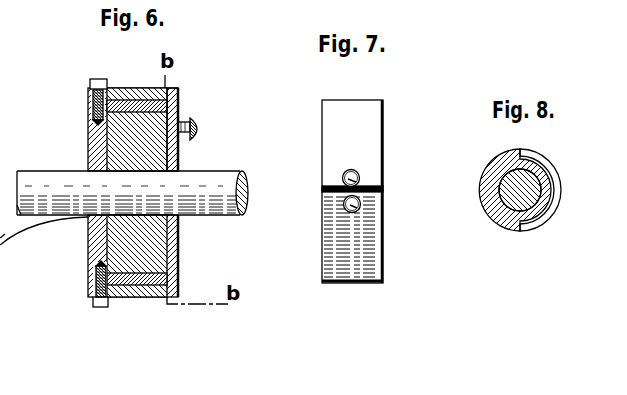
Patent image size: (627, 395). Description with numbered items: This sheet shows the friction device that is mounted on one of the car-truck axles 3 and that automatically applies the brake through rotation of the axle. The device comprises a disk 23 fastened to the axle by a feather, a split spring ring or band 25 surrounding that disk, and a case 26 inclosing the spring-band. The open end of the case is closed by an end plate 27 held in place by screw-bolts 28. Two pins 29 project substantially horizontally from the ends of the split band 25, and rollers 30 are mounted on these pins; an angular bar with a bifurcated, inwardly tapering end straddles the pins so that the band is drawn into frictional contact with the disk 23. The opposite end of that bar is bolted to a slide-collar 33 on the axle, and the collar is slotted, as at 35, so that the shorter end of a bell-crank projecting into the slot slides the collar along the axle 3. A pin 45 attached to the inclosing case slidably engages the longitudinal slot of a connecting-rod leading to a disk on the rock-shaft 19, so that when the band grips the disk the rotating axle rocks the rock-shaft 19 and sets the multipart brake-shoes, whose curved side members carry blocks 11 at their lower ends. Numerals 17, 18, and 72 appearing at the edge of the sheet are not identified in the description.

In FIG. 6, the axle 3 is at (229, 183).
In FIG. 8, the axle 3 is at (524, 188).
In FIG. 6, the disk 23 is at (118, 142).
In FIG. 6, the split spring ring or band 25 is at (178, 106).
In FIG. 7, the split spring ring or band 25 is at (362, 128).
In FIG. 6, the case 26 is at (130, 88).
In FIG. 6, the end plate 27 is at (98, 234).
In FIG. 6, the screw-bolts 28 is at (90, 79).
In FIG. 7, the pins 29 is at (356, 178).
In FIG. 7, the rollers 30 is at (346, 176).
In FIG. 8, the slide-collar 33 is at (508, 230).
In FIG. 8, the slot 35 is at (546, 214).
In FIG. 6, the pin 45 is at (196, 140).
In FIG. 6, the blocks 11 is at (228, 9).
In FIG. 6, the arm 17 is at (68, 15).
In FIG. 7, the arm 17 is at (283, 5).
In FIG. 6, the arm 18 is at (23, 18).
In FIG. 7, the arm 18 is at (267, 0).
In FIG. 8, the arm 18 is at (530, 0).
In FIG. 6, the rock-shaft 19 is at (193, 9).
In FIG. 8, the lever 72 is at (450, 0).